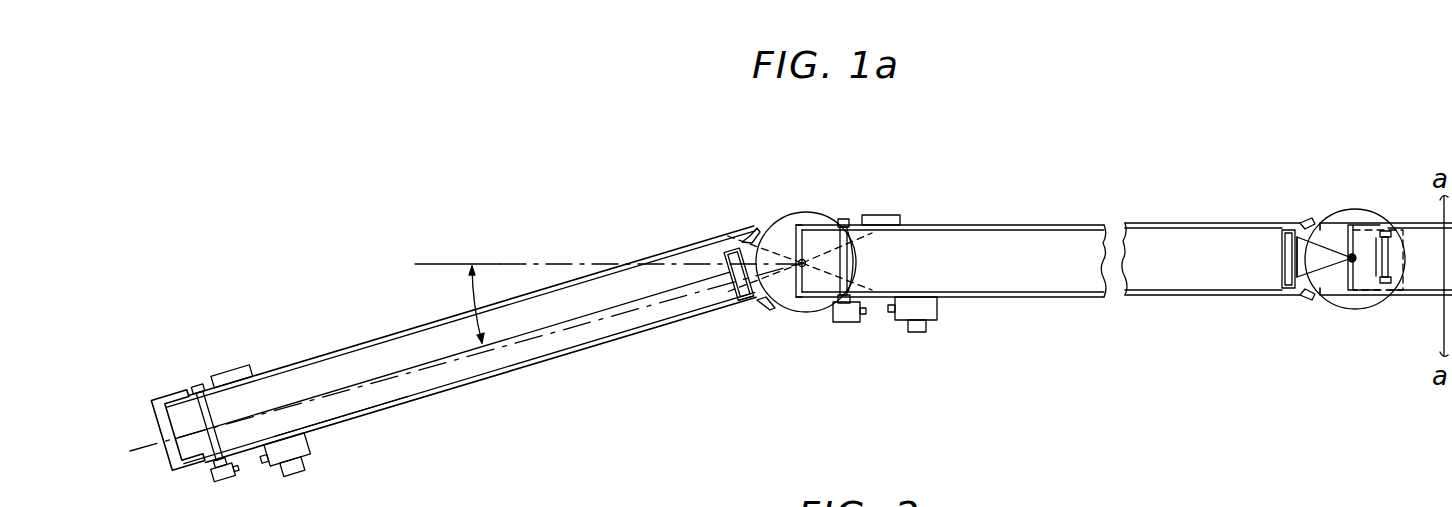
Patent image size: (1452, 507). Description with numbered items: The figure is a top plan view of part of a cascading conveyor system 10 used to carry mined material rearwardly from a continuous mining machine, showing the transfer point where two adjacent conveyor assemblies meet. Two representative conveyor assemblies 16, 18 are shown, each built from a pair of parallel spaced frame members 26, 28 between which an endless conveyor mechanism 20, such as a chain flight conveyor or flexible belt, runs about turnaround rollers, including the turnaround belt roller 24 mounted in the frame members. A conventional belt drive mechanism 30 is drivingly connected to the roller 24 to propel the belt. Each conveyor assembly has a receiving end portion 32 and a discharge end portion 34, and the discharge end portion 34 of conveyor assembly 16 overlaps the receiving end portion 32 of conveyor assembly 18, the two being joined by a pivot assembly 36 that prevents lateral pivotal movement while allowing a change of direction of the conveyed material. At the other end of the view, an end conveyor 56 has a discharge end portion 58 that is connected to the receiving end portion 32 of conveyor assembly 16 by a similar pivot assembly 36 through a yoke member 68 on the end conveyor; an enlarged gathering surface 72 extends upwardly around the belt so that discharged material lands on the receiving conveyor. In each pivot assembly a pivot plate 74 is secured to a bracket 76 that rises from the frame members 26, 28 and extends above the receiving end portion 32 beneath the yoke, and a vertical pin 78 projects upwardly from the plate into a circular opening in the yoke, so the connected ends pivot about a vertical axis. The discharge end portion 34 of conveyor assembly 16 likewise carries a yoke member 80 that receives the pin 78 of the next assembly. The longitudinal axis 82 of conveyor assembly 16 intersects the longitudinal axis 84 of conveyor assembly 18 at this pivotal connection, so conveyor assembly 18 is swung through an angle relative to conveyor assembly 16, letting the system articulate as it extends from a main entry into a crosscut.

The cascading conveyor system 10 is at (948, 215).
The conveyor assembly 16 is at (1073, 226).
The conveyor assembly 18 is at (595, 276).
The endless conveyor mechanism 20 is at (458, 368).
The turnaround belt roller 24 is at (197, 410).
The frame member 26 is at (368, 342).
The frame member 28 is at (420, 402).
The belt drive mechanism 30 is at (302, 464).
The receiving end portion 32 is at (772, 243).
The discharge end portion 34 is at (193, 443).
The pivot assembly 36 is at (818, 318).
The end conveyor 56 is at (1425, 295).
The discharge end portion 58 is at (1440, 273).
The yoke member 68 is at (1360, 233).
The gathering surface 72 is at (1333, 302).
The pivot plate 74 is at (755, 267).
The bracket 76 is at (748, 297).
The vertical pin 78 is at (806, 259).
The yoke member 80 is at (168, 450).
The longitudinal axis 82 is at (486, 260).
The longitudinal axis 84 is at (583, 323).